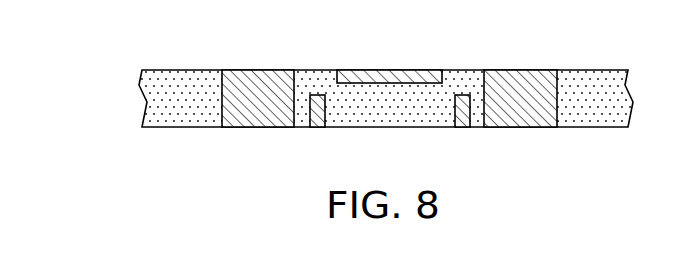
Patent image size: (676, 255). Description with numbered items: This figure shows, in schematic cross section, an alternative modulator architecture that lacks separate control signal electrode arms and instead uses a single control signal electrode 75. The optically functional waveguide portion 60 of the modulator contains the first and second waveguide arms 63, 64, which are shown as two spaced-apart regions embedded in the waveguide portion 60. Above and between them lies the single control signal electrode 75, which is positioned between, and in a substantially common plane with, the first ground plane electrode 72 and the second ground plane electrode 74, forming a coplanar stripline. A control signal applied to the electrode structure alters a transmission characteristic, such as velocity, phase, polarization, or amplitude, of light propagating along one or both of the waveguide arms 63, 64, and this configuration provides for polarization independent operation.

The optically functional waveguide portion 60 is at (133, 94).
The first ground plane electrode 72 is at (263, 70).
The second ground plane electrode 74 is at (517, 70).
The control signal electrode 75 is at (388, 70).
The first waveguide arm 63 is at (318, 129).
The second waveguide arm 64 is at (460, 129).